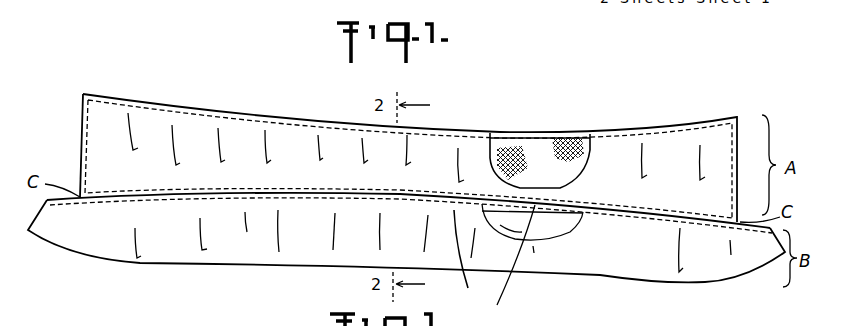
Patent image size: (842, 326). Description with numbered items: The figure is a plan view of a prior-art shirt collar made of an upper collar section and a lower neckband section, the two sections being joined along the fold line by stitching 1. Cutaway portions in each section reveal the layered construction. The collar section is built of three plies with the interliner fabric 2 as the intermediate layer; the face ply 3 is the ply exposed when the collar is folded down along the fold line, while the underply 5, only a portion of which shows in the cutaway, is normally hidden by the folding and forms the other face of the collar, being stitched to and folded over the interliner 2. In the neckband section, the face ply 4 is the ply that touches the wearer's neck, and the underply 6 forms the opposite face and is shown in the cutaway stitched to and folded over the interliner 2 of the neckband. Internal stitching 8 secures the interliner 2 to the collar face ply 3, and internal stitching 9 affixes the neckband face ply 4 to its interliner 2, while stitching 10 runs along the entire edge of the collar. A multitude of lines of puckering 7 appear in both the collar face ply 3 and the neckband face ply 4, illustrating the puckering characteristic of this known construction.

The stitching 1 is at (464, 257).
The interliner fabric 2 is at (525, 160).
The face ply 3 is at (623, 148).
The face ply 4 is at (657, 251).
The underply 5 is at (495, 134).
The underply 6 is at (512, 265).
The lines of puckering 7 is at (219, 140).
The internal stitching 8 is at (565, 140).
The internal stitching 9 is at (513, 222).
The stitching 10 is at (167, 111).